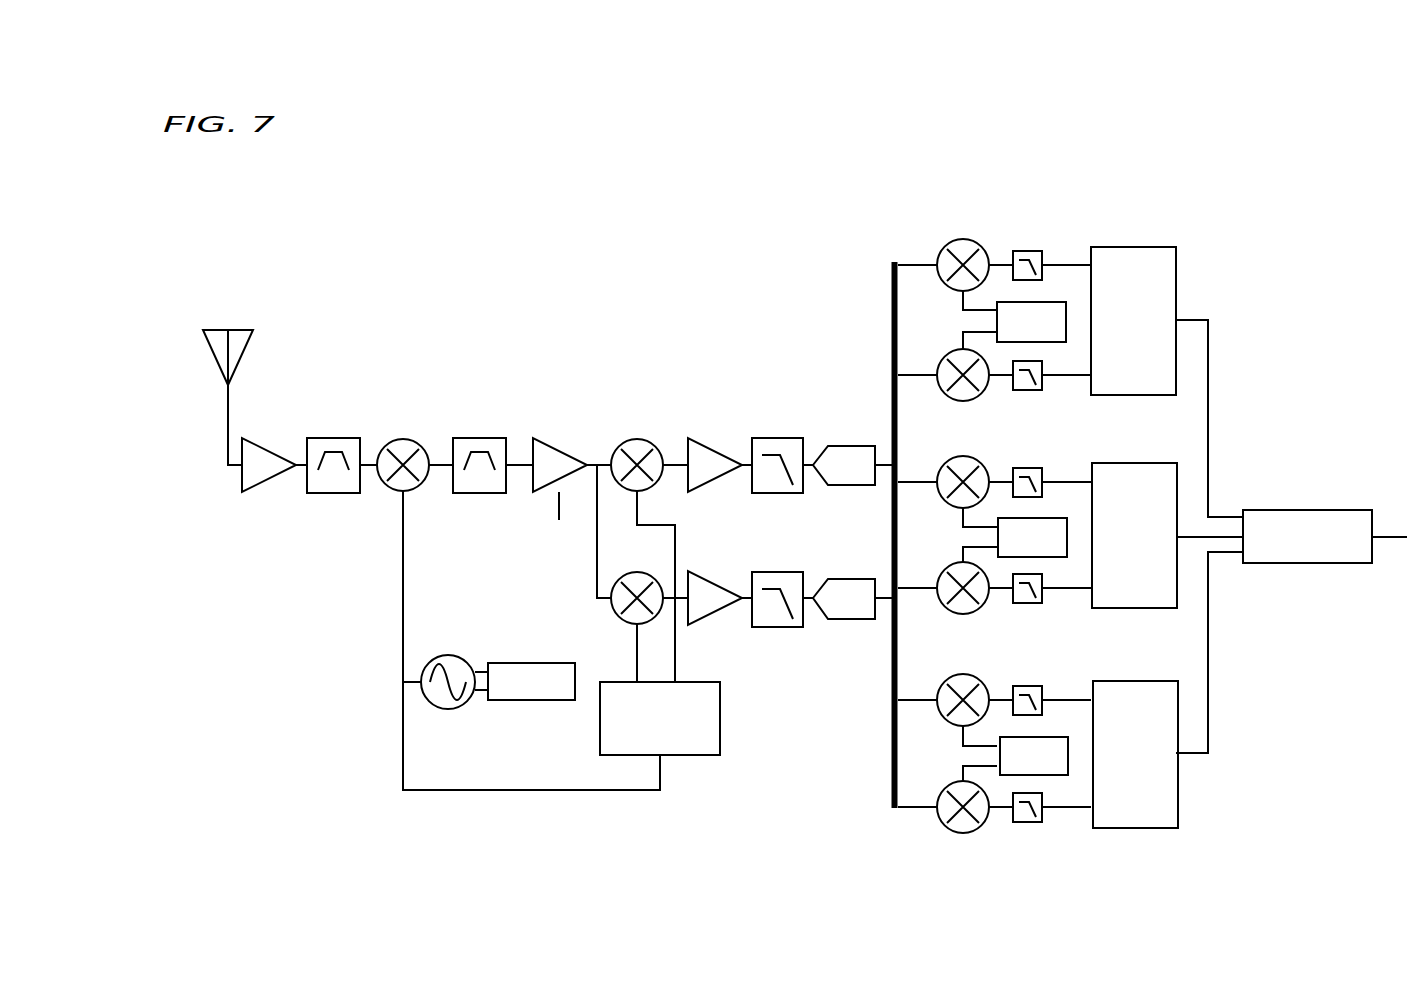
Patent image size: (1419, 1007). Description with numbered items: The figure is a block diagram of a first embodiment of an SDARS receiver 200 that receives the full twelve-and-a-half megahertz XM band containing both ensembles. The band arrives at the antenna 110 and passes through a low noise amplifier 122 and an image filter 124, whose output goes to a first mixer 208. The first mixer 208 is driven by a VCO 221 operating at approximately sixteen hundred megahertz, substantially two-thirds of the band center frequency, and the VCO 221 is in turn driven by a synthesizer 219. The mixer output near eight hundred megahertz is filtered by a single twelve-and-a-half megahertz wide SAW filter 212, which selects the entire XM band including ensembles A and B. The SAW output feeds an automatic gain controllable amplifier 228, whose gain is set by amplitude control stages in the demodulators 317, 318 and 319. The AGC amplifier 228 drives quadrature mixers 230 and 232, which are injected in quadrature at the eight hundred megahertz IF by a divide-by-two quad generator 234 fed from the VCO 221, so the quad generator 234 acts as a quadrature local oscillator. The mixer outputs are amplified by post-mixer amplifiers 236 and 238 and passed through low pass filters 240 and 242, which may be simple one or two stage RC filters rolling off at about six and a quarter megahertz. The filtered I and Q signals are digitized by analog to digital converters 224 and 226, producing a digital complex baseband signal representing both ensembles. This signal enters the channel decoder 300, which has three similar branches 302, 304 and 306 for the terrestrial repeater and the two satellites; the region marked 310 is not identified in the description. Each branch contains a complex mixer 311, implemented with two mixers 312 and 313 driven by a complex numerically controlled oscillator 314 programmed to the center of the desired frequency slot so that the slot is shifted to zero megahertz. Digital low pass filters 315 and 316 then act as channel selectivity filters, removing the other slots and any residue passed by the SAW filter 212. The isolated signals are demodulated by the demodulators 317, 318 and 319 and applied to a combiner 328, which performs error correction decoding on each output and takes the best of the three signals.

The antenna 110 is at (215, 362).
The low noise amplifier 122 is at (233, 478).
The image filter 124 is at (327, 493).
The receiver 200 is at (390, 292).
The first mixer 208 is at (401, 437).
The SAW filter 212 is at (453, 445).
The synthesizer 219 is at (532, 700).
The VCO 221 is at (448, 655).
The analog to digital converter 224 is at (848, 446).
The analog to digital converter 226 is at (855, 619).
The automatic gain controllable (AGC) amplifier 228 is at (553, 438).
The quadrature mixer 230 is at (635, 438).
The quadrature mixer 232 is at (617, 611).
The divide by 2 quad generator 234 is at (690, 755).
The post-mixer amplifier 236 is at (712, 450).
The post-mixer amplifier 238 is at (725, 622).
The low pass filter 240 is at (772, 438).
The low pass filter 242 is at (785, 627).
The channel decoder 300 is at (1223, 188).
The branch 302 is at (925, 868).
The branch 304 is at (930, 640).
The branch 306 is at (900, 262).
The satellite 1 channel path 310 is at (954, 279).
The complex mixer 311 is at (927, 312).
The mixer 312 is at (935, 247).
The mixer 313 is at (962, 401).
The complex numerically controlled oscillator 314 is at (1053, 302).
The digital low pass filter 315 is at (1010, 255).
The digital low pass filter 316 is at (1025, 391).
The demodulator 317 is at (1176, 275).
The demodulator 318 is at (1158, 463).
The demodulator 319 is at (1138, 828).
The combiner 328 is at (1318, 510).